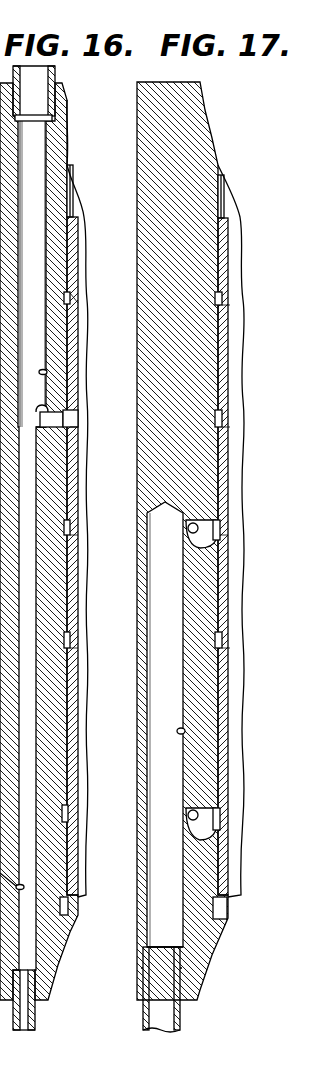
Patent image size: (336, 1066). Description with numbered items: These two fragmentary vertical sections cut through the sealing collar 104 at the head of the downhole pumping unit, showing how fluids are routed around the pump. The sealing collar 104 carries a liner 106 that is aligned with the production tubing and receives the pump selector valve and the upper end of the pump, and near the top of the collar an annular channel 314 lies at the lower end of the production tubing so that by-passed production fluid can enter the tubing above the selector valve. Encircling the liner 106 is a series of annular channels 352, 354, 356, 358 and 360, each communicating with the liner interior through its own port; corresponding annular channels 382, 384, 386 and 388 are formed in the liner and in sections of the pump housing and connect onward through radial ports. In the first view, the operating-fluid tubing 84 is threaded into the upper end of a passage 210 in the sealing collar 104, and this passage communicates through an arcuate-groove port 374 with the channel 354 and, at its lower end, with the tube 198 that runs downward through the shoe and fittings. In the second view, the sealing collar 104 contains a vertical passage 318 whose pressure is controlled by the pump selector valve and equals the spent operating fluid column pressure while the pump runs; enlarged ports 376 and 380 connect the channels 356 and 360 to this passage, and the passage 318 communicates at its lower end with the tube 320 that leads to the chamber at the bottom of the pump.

In FIG. 16, the operating-fluid tubing 84 is at (57, 76).
In FIG. 16, the sealing collar 104 is at (66, 148).
In FIG. 17, the sealing collar 104 is at (200, 138).
In FIG. 16, the liner 106 is at (80, 270).
In FIG. 17, the liner 106 is at (228, 262).
In FIG. 16, the tube 198 is at (36, 1027).
In FIG. 16, the passage 210 is at (47, 372).
In FIG. 16, the annular channel 314 is at (70, 204).
In FIG. 17, the annular channel 314 is at (222, 205).
In FIG. 17, the vertical passage 318 is at (185, 731).
In FIG. 17, the tube 320 is at (143, 1022).
In FIG. 16, the annular channel 352 is at (71, 298).
In FIG. 17, the annular channel 352 is at (223, 298).
In FIG. 16, the annular channel 354 is at (76, 415).
In FIG. 17, the annular channel 354 is at (225, 415).
In FIG. 16, the annular channel 356 is at (71, 528).
In FIG. 17, the annular channel 356 is at (221, 528).
In FIG. 16, the annular channel 358 is at (71, 640).
In FIG. 17, the annular channel 358 is at (222, 640).
In FIG. 16, the annular channel 360 is at (69, 818).
In FIG. 17, the annular channel 360 is at (221, 817).
In FIG. 16, the port 374 is at (38, 404).
In FIG. 17, the port 376 is at (190, 533).
In FIG. 17, the port 380 is at (190, 818).
In FIG. 16, the annular channel 382 is at (78, 305).
In FIG. 17, the annular channel 382 is at (230, 306).
In FIG. 16, the annular channel 384 is at (79, 426).
In FIG. 17, the annular channel 384 is at (230, 426).
In FIG. 16, the annular channel 386 is at (78, 535).
In FIG. 17, the annular channel 386 is at (228, 535).
In FIG. 16, the annular channel 388 is at (78, 648).
In FIG. 17, the annular channel 388 is at (230, 648).